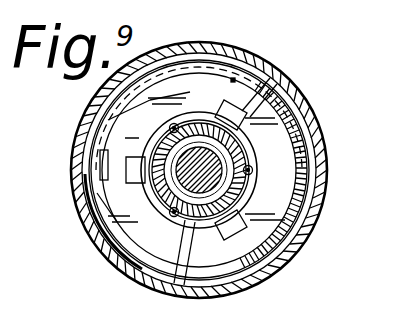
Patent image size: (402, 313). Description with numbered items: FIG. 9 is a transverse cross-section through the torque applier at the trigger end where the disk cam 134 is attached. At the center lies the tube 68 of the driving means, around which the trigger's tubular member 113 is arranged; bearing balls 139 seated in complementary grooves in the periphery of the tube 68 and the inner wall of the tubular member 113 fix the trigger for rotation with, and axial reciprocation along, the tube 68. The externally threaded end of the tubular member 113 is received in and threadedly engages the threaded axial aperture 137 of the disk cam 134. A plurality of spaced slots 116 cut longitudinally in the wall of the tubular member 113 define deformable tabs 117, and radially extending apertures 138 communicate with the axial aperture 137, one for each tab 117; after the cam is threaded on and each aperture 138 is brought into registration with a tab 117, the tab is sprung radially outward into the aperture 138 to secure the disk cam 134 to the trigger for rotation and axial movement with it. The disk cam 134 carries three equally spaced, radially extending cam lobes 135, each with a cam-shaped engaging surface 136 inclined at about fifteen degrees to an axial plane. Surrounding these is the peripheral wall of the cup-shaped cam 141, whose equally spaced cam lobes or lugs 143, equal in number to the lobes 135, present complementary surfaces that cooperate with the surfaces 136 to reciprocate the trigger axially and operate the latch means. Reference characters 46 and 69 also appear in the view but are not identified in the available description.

The rim 46 is at (88, 228).
The tube 68 is at (129, 252).
The hub 69 is at (168, 128).
The tubular member 113 is at (105, 212).
The spaced slots 116 is at (160, 283).
The deformable tabs 117 is at (115, 135).
The disk cam 134 is at (100, 153).
The cam lobes 135 is at (110, 204).
The cam-shaped engaging surface 136 is at (97, 180).
The axial aperture 137 is at (115, 125).
The aperture 138 is at (240, 108).
The bearing balls 139 is at (174, 124).
The cup-shaped cam 141 is at (112, 253).
The cam lobes or lugs 143 is at (96, 165).